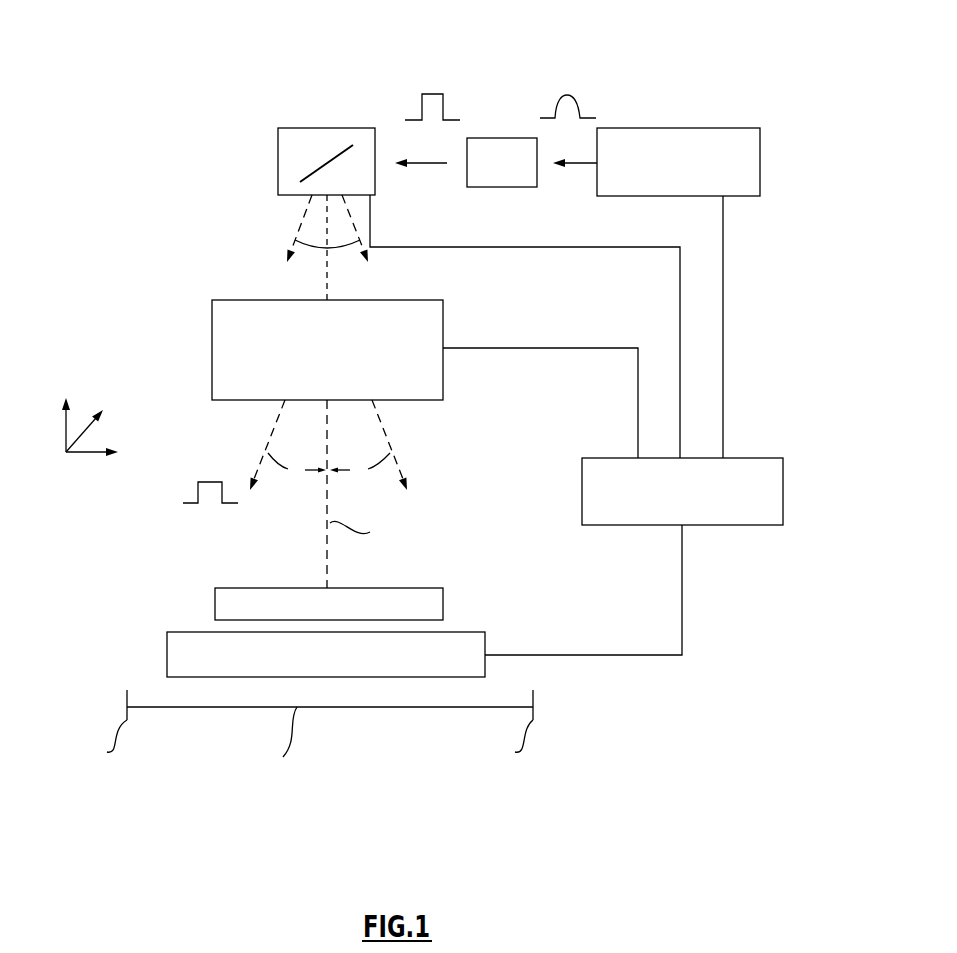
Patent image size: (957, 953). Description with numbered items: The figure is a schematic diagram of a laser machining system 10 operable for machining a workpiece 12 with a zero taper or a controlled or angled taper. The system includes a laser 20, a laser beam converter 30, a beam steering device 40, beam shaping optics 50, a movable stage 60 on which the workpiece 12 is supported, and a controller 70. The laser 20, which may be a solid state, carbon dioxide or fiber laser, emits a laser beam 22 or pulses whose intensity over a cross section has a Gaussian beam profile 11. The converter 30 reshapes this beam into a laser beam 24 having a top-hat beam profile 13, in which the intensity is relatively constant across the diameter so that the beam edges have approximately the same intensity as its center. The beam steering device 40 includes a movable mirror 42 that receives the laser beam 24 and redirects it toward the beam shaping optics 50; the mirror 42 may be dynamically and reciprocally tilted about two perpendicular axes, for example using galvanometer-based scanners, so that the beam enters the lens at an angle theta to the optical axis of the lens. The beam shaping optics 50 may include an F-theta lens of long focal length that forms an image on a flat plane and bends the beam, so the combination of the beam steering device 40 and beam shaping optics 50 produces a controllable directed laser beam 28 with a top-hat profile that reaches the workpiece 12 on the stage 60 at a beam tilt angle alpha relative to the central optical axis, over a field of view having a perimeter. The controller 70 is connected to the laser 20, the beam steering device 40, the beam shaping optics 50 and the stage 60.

The laser machining system 10 is at (95, 93).
The Gaussian beam profile 11 is at (570, 93).
The workpiece 12 is at (430, 588).
The top-hat beam profile 13 is at (430, 93).
The laser 20 is at (686, 128).
The laser beam 22 is at (578, 164).
The laser beam 24 is at (420, 164).
The directed laser beam 28 is at (272, 428).
The laser beam converter 30 is at (497, 138).
The beam steering device 40 is at (300, 128).
The movable mirror 42 is at (308, 165).
The beam shaping optics 50 is at (240, 300).
The movable stage 60 is at (205, 632).
The controller 70 is at (614, 458).